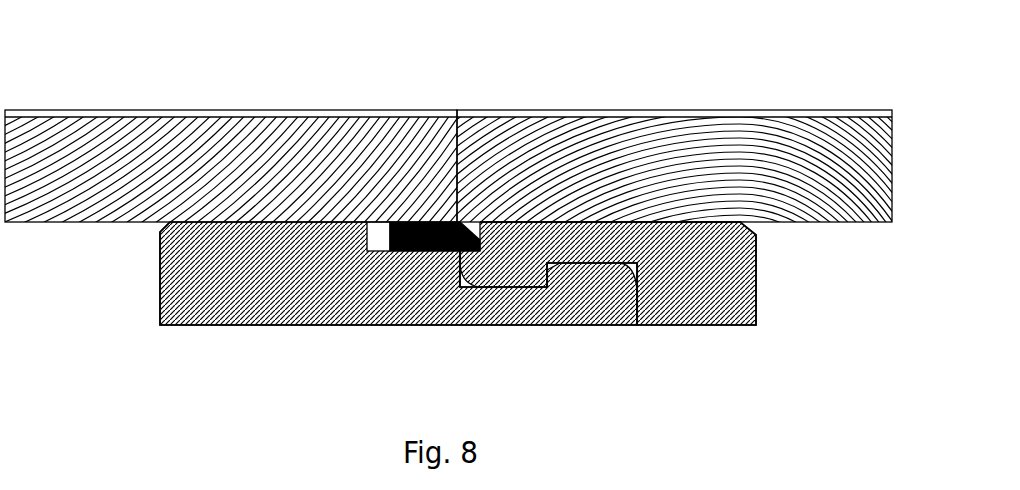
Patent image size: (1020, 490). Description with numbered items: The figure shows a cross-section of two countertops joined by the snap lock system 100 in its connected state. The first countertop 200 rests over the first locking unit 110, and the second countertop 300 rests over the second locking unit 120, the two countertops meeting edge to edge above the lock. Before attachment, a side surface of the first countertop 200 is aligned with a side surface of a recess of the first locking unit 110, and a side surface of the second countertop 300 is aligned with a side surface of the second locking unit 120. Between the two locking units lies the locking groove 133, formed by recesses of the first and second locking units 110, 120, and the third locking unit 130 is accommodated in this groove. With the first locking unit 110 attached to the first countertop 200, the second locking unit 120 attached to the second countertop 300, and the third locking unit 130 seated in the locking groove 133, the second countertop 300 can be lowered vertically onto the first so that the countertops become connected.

The snap lock system 100 is at (592, 350).
The first locking unit 110 is at (245, 297).
The second locking unit 120 is at (688, 290).
The third locking unit 130 is at (425, 251).
The locking groove 133 is at (383, 237).
The first countertop 200 is at (342, 128).
The second countertop 300 is at (647, 138).